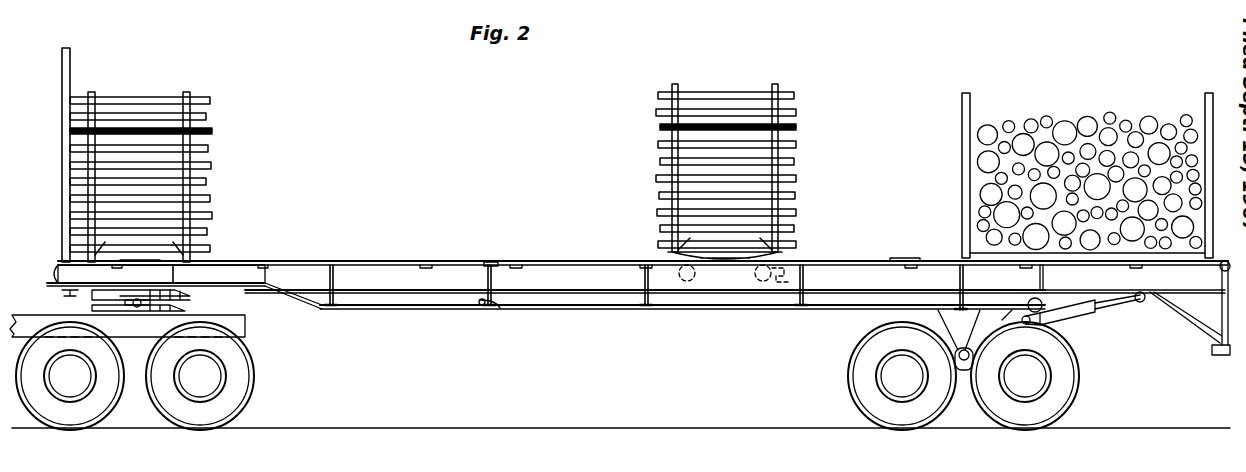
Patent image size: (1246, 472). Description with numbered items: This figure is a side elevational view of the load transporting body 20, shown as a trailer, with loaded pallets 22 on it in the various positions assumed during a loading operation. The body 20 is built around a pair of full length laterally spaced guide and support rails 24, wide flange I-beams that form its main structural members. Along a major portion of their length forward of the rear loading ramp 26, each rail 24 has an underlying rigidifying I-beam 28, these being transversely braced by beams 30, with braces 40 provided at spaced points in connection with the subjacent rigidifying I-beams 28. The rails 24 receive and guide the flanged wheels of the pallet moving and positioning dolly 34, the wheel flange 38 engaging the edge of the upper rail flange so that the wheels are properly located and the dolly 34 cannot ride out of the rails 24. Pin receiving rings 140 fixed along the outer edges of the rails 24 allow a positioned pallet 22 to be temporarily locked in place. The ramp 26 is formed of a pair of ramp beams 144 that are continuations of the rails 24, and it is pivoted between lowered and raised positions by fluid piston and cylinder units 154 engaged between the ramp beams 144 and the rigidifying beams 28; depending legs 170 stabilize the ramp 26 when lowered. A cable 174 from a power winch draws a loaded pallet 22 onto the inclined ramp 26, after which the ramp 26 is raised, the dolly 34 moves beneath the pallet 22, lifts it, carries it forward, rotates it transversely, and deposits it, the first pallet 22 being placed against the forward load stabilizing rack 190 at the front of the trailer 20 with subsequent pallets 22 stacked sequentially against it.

The load transporting body 20 is at (363, 246).
The pallet 22 is at (222, 147).
The guide and support rails 24 is at (604, 255).
The loading ramp 26 is at (1171, 318).
The rigidifying I-beam 28 is at (584, 315).
The transverse brace beams 30 is at (478, 303).
The pallet moving and positioning dolly 34 is at (784, 262).
The wheel flange 38 is at (490, 262).
The braces 40 is at (492, 310).
The pin receiving rings 140 is at (395, 260).
The ramp beams 144 is at (1196, 286).
The fluid piston and cylinder units 154 is at (1091, 323).
The depending legs 170 is at (1210, 342).
The cable 174 is at (908, 258).
The forward load stabilizing rack 190 is at (70, 82).